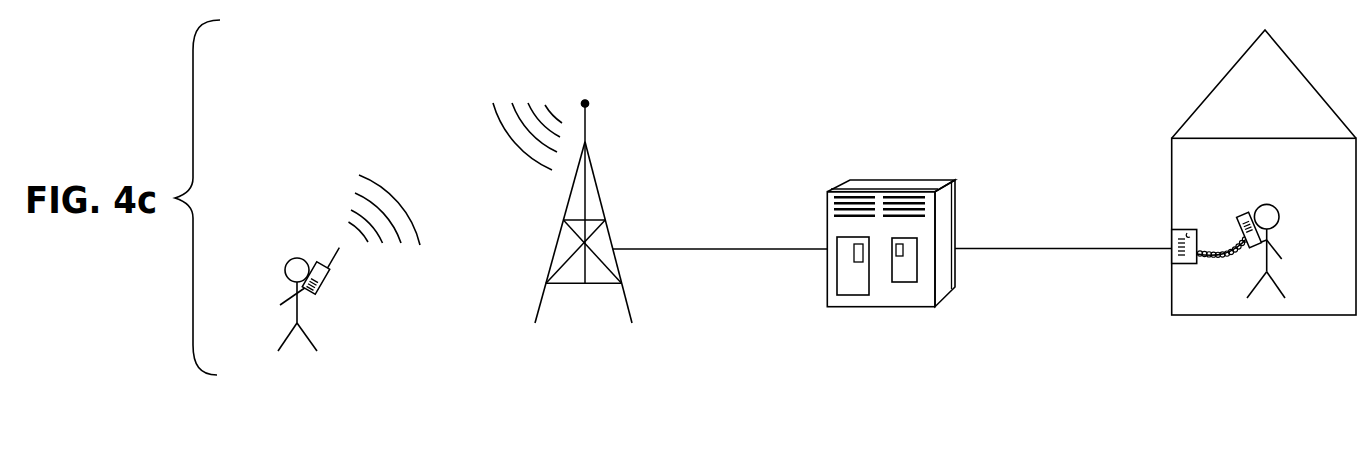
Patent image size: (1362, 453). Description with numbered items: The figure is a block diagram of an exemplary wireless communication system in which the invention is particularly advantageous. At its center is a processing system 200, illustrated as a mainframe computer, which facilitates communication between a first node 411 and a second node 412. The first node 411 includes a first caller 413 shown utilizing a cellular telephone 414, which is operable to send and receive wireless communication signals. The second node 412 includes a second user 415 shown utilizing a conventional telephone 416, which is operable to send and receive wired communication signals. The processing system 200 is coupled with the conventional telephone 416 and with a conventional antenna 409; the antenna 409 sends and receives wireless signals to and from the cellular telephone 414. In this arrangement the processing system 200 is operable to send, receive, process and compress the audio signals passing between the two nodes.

The first node 411 is at (279, 183).
The first caller 413 is at (285, 266).
The cellular telephone 414 is at (300, 312).
The conventional antenna 409 is at (599, 195).
The processing system 200 is at (897, 178).
The second node 412 is at (1212, 92).
The second user 415 is at (1266, 204).
The conventional telephone 416 is at (1190, 265).